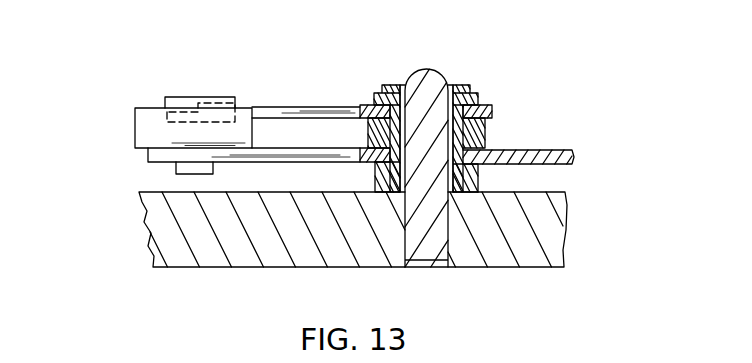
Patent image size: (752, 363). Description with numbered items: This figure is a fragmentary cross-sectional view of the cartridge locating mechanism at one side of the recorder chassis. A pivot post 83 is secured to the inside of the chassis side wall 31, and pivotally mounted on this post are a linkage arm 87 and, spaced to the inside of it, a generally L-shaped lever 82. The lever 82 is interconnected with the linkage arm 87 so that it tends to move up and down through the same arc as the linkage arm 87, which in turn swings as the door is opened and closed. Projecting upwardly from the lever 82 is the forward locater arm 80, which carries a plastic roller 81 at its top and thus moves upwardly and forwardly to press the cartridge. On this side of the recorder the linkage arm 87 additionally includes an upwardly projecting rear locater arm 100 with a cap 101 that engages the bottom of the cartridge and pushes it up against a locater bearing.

The side wall 31 is at (252, 268).
The forward locater arm 80 is at (150, 165).
The plastic roller 81 is at (135, 125).
The lever 82 is at (526, 149).
The pivot post 83 is at (425, 68).
The linkage arm 87 is at (368, 104).
The rear locater arm 100 is at (276, 106).
The cap 101 is at (180, 96).